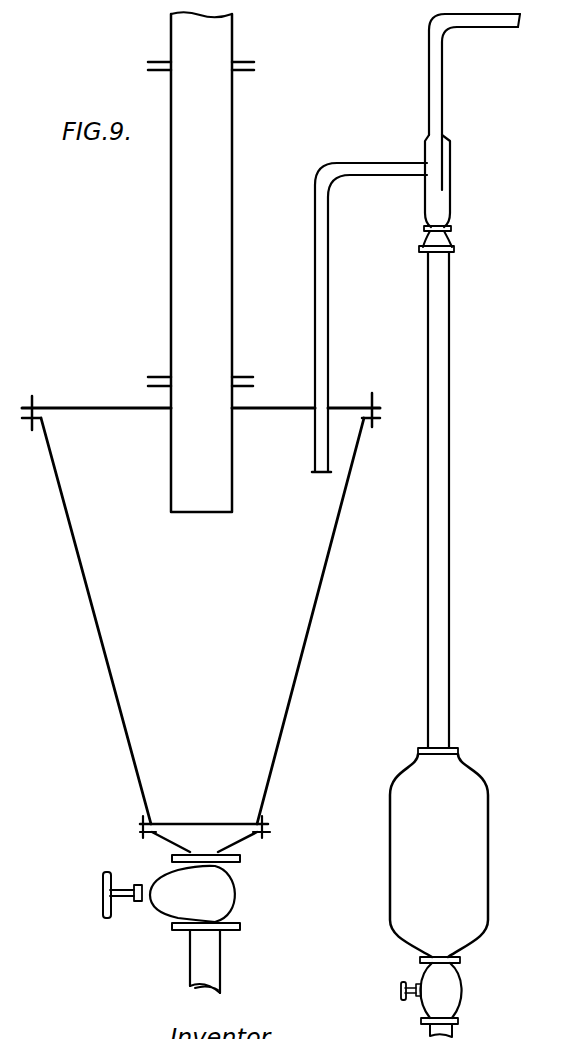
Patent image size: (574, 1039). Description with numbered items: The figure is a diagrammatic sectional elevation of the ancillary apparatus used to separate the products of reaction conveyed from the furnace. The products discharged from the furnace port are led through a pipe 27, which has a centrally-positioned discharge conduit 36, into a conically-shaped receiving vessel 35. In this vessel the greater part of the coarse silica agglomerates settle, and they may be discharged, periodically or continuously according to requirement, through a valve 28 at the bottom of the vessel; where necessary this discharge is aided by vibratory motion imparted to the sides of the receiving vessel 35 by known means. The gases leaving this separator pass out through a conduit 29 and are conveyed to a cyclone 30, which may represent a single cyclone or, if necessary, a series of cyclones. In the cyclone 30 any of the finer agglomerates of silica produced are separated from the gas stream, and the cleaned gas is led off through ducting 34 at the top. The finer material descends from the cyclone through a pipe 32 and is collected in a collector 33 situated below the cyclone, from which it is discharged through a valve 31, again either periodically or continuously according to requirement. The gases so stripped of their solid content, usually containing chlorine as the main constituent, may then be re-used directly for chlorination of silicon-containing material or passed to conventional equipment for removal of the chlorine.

The pipe 27 is at (180, 42).
The valve 28 is at (225, 890).
The conduit 29 is at (315, 192).
The cyclone 30 is at (450, 192).
The valve 31 is at (452, 988).
The pipe 32 is at (450, 572).
The collector 33 is at (476, 826).
The ducting 34 is at (488, 16).
The conically-shaped receiving vessel 35 is at (142, 611).
The centrally-positioned discharge conduit 36 is at (200, 476).